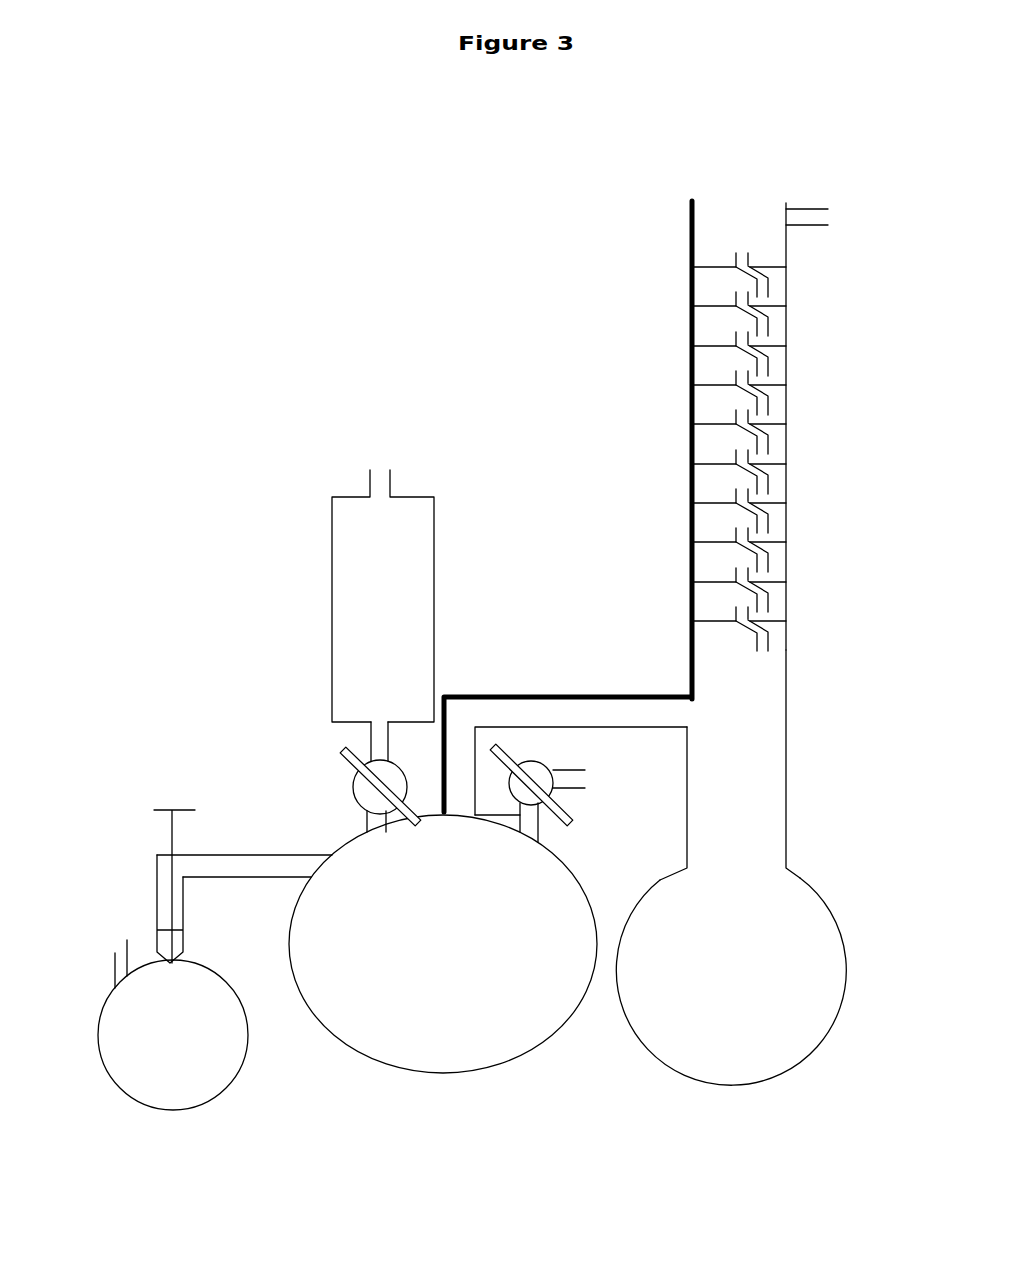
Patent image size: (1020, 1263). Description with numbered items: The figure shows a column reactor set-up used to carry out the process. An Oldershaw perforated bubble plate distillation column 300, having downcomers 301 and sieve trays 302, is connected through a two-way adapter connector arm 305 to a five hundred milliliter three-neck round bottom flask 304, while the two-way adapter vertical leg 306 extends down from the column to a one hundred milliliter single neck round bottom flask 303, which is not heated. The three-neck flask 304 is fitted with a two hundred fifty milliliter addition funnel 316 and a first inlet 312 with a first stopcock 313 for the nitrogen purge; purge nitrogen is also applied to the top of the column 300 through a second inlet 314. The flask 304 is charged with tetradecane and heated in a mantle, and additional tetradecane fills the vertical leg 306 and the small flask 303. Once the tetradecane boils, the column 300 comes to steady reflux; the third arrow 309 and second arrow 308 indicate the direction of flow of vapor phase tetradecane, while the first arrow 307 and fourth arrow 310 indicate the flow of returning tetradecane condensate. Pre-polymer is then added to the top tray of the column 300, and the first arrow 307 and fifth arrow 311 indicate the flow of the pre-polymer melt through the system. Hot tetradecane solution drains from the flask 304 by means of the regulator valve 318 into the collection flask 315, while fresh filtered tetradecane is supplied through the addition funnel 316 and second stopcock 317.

The distillation column 300 is at (690, 370).
The downcomers 301 is at (790, 290).
The sieve trays 302 is at (790, 345).
The 100 ml single neck round bottom flask 303 is at (766, 946).
The 500 ml 3-neck round bottom flask 304 is at (377, 883).
The 2-way adapter connector arm 305 is at (502, 680).
The 2-way adapter vertical leg 306 is at (792, 717).
The first arrow 307 is at (746, 200).
The second arrow 308 is at (722, 672).
The third arrow 309 is at (547, 681).
The fourth arrow 310 is at (560, 745).
The fifth arrow 311 is at (733, 740).
The first inlet 312 is at (597, 778).
The first stopcock 313 is at (597, 820).
The second inlet 314 is at (835, 222).
The collection flask 315 is at (115, 1036).
The 250 ml addition funnel 316 is at (324, 541).
The second stopcock 317 is at (330, 745).
The regulator valve 318 is at (157, 830).